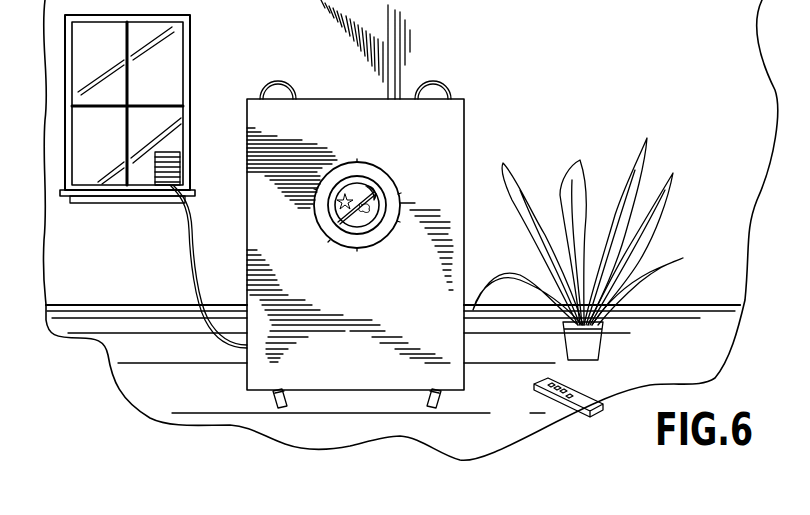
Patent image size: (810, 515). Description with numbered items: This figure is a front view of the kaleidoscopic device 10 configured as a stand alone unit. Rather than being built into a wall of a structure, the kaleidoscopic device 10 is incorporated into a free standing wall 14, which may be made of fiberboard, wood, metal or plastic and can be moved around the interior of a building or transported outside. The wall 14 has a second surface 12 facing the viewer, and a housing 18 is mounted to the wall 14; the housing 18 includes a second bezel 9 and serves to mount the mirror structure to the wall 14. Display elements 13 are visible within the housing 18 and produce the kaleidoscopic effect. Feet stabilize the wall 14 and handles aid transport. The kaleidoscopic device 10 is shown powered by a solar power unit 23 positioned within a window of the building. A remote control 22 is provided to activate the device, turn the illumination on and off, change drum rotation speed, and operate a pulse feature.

The second bezel 9 is at (397, 183).
The kaleidoscopic device 10 is at (502, 108).
The second surface 12 is at (435, 144).
The display elements 13 is at (337, 223).
The wall 14 is at (345, 120).
The housing 18 is at (383, 230).
The remote control 22 is at (590, 393).
The solar power unit 23 is at (155, 170).